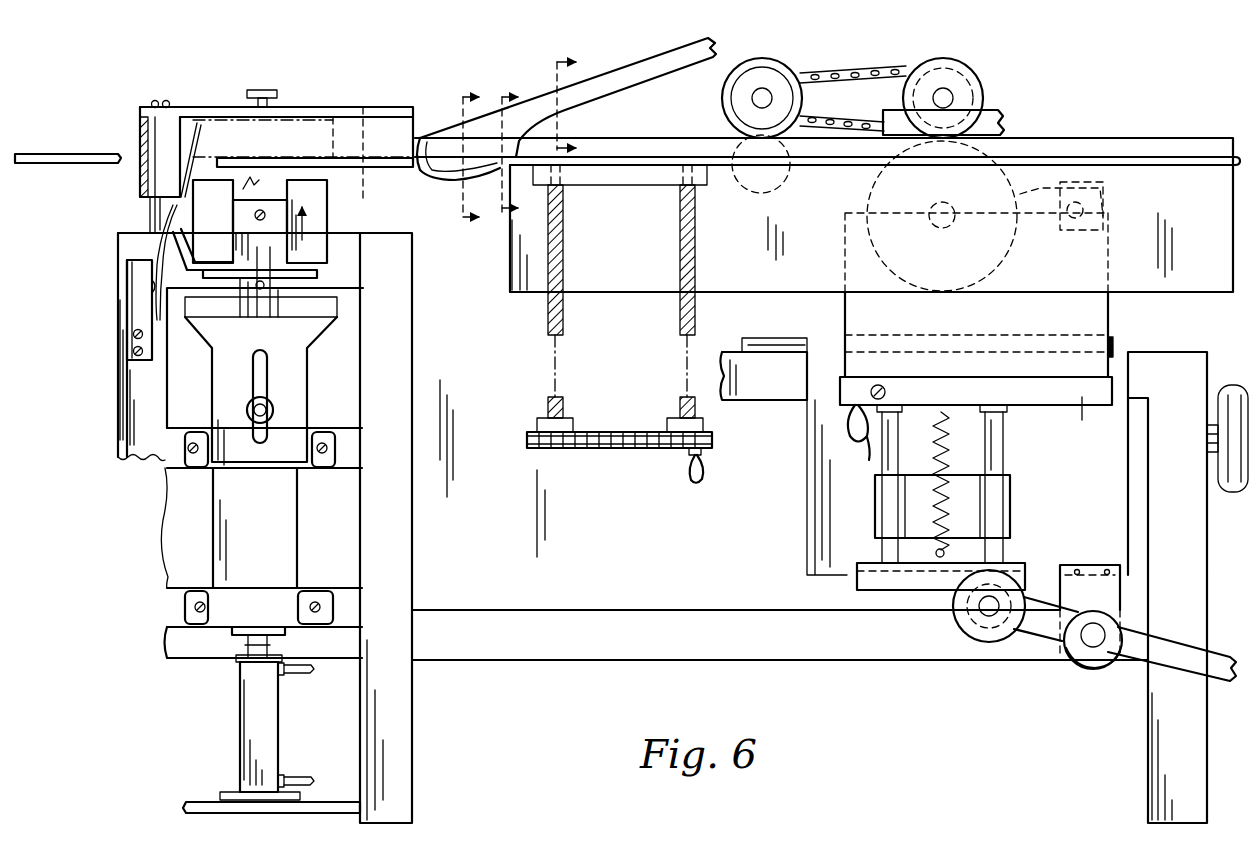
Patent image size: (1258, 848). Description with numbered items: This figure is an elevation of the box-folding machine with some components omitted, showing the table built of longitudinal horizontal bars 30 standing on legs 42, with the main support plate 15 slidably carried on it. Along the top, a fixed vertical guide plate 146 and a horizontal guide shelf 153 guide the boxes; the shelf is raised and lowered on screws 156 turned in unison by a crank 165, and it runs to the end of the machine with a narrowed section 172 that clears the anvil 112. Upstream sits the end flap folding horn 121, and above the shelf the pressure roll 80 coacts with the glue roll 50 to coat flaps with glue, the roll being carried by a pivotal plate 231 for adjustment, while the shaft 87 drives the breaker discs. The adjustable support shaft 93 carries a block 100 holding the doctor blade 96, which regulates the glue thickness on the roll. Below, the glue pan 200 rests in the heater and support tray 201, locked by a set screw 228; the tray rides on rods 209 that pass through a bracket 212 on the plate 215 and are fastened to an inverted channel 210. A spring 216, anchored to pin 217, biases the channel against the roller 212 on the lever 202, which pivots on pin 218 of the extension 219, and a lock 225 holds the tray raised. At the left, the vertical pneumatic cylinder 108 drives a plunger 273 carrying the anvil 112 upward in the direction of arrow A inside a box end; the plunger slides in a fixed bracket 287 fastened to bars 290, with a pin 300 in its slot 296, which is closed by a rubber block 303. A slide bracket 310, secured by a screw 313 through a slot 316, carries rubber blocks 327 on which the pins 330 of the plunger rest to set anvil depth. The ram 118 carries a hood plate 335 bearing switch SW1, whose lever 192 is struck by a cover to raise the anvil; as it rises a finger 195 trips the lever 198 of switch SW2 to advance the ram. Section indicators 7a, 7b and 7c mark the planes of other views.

The main support plate 15 is at (782, 340).
The longitudinal horizontal bars 30 is at (777, 386).
The legs 42 is at (130, 383).
The glue roll 50 is at (873, 184).
The pressure roll 80 is at (944, 58).
The shaft 87 is at (806, 40).
The adjustable support shaft 93 is at (1082, 225).
The doctor blade 96 is at (1061, 228).
The block 100 is at (1100, 206).
The vertical pneumatic cylinder 108 is at (250, 716).
The anvil 112 is at (318, 254).
The ram 118 is at (343, 124).
The end flap folding horn 121 is at (681, 50).
The vertical guide plate 146 is at (1153, 141).
The horizontal guide shelf 153 is at (1170, 162).
The screws 156 is at (694, 260).
The crank 165 is at (705, 463).
The narrowed section 172 is at (317, 167).
The switch lever 192 is at (196, 141).
The finger 195 is at (183, 233).
The switch lever 198 is at (158, 222).
The pan 200 is at (1097, 318).
The heater and support tray 201 is at (1102, 417).
The lever 202 is at (1139, 662).
The rods 209 is at (998, 457).
The inverted channel 210 is at (883, 580).
The bracket and roller 212 is at (997, 507).
The plate 215 is at (1100, 550).
The spring 216 is at (947, 478).
The pin 217 is at (938, 556).
The pin 218 is at (1090, 645).
The extension 219 is at (1105, 597).
The lock 225 is at (845, 439).
The set screw 228 is at (888, 390).
The pivotal plate 231 is at (893, 105).
The plunger 273 is at (285, 632).
The fixed bracket 287 is at (297, 532).
The bars 290 is at (353, 463).
The slot 296 is at (258, 308).
The pin 300 is at (254, 372).
The rubber block 303 is at (236, 243).
The slide bracket 310 is at (297, 372).
The screw 313 is at (274, 409).
The slot 316 is at (267, 385).
The rubber blocks 327 is at (318, 307).
The pins 330 is at (317, 275).
The hood plate 335 is at (288, 105).
The section line 7a is at (582, 106).
The section line 7b is at (525, 152).
The section line 7c is at (479, 158).
The arrow A is at (310, 231).
The switch SW1 is at (167, 172).
The switch SW2 is at (135, 281).